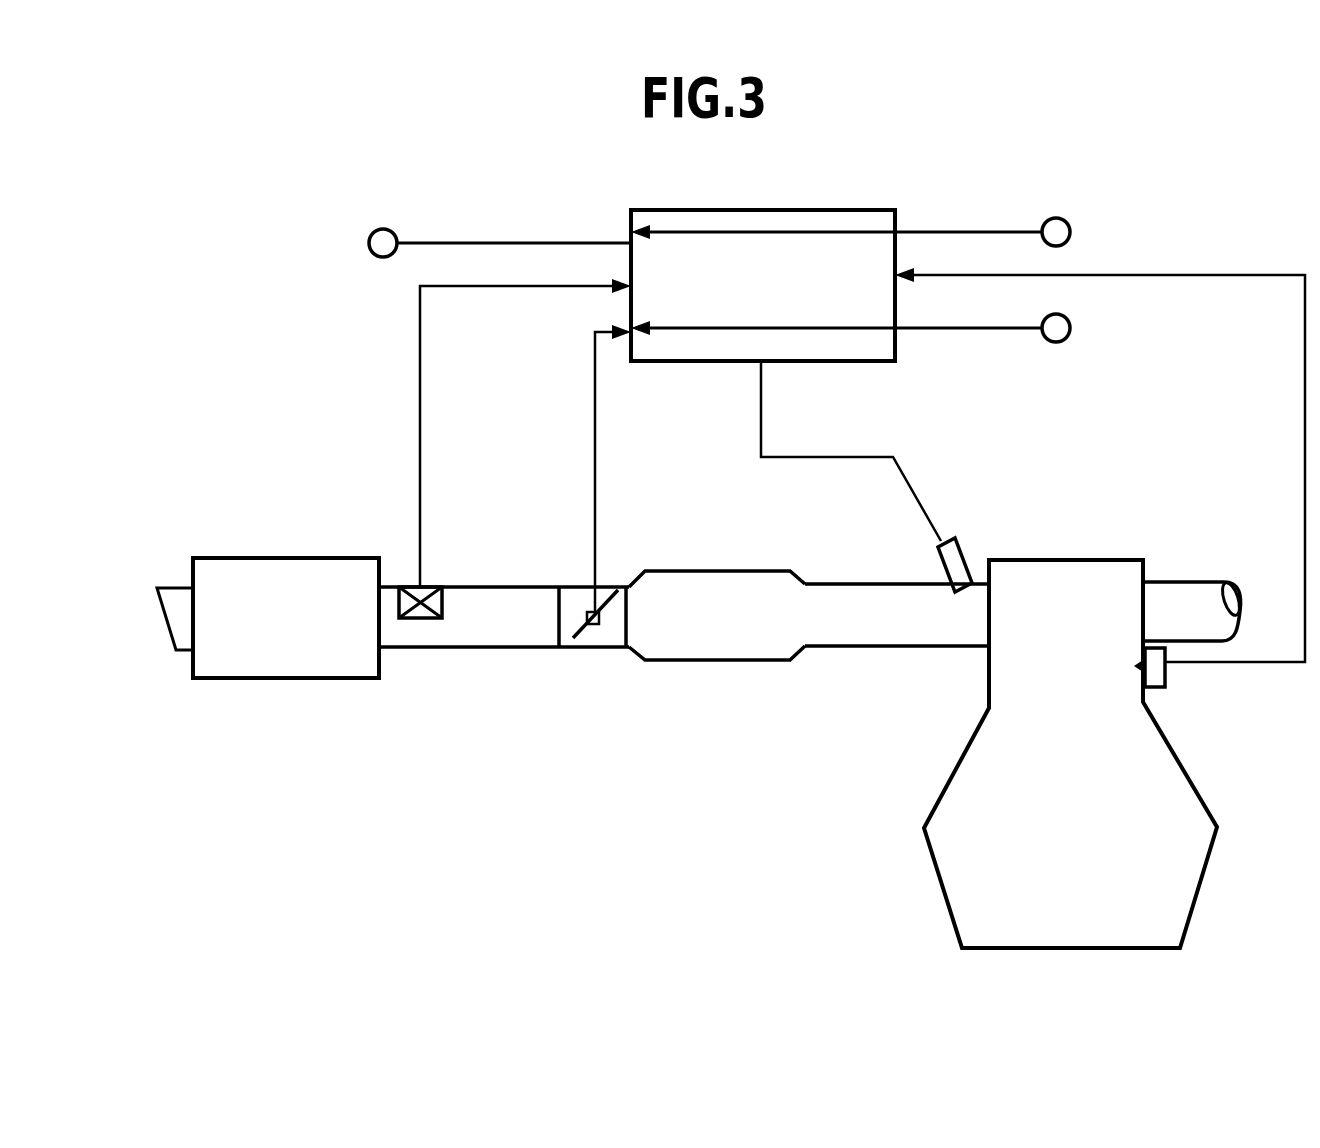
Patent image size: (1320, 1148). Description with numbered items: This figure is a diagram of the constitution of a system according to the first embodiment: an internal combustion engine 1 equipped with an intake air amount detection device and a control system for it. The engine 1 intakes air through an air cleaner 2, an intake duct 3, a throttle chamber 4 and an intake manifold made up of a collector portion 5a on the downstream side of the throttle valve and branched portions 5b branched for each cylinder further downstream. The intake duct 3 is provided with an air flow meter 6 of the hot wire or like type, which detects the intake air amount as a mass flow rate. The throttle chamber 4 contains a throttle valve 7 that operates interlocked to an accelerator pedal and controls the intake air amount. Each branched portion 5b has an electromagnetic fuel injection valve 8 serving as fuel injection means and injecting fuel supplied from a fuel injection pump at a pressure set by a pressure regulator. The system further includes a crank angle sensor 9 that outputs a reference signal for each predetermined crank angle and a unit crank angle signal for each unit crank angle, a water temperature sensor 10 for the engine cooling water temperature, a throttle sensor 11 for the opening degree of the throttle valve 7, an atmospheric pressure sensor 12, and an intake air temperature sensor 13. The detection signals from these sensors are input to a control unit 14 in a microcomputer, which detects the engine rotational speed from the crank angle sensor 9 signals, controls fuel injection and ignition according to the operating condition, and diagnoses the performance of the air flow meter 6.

The internal combustion engine 1 is at (1193, 778).
The air cleaner 2 is at (247, 558).
The intake duct 3 is at (475, 650).
The throttle chamber 4 is at (562, 648).
The collector portion 5a is at (749, 662).
The branched portions 5b is at (877, 647).
The air flow meter 6 is at (439, 587).
The throttle valve 7 is at (580, 647).
The electromagnetic fuel injection valve 8 is at (962, 550).
The crank angle sensor 9 is at (393, 222).
The water temperature sensor 10 is at (1155, 672).
The throttle sensor 11 is at (589, 610).
The atmospheric pressure sensor 12 is at (1065, 212).
The intake air temperature sensor 13 is at (1071, 329).
The control unit 14 is at (837, 208).